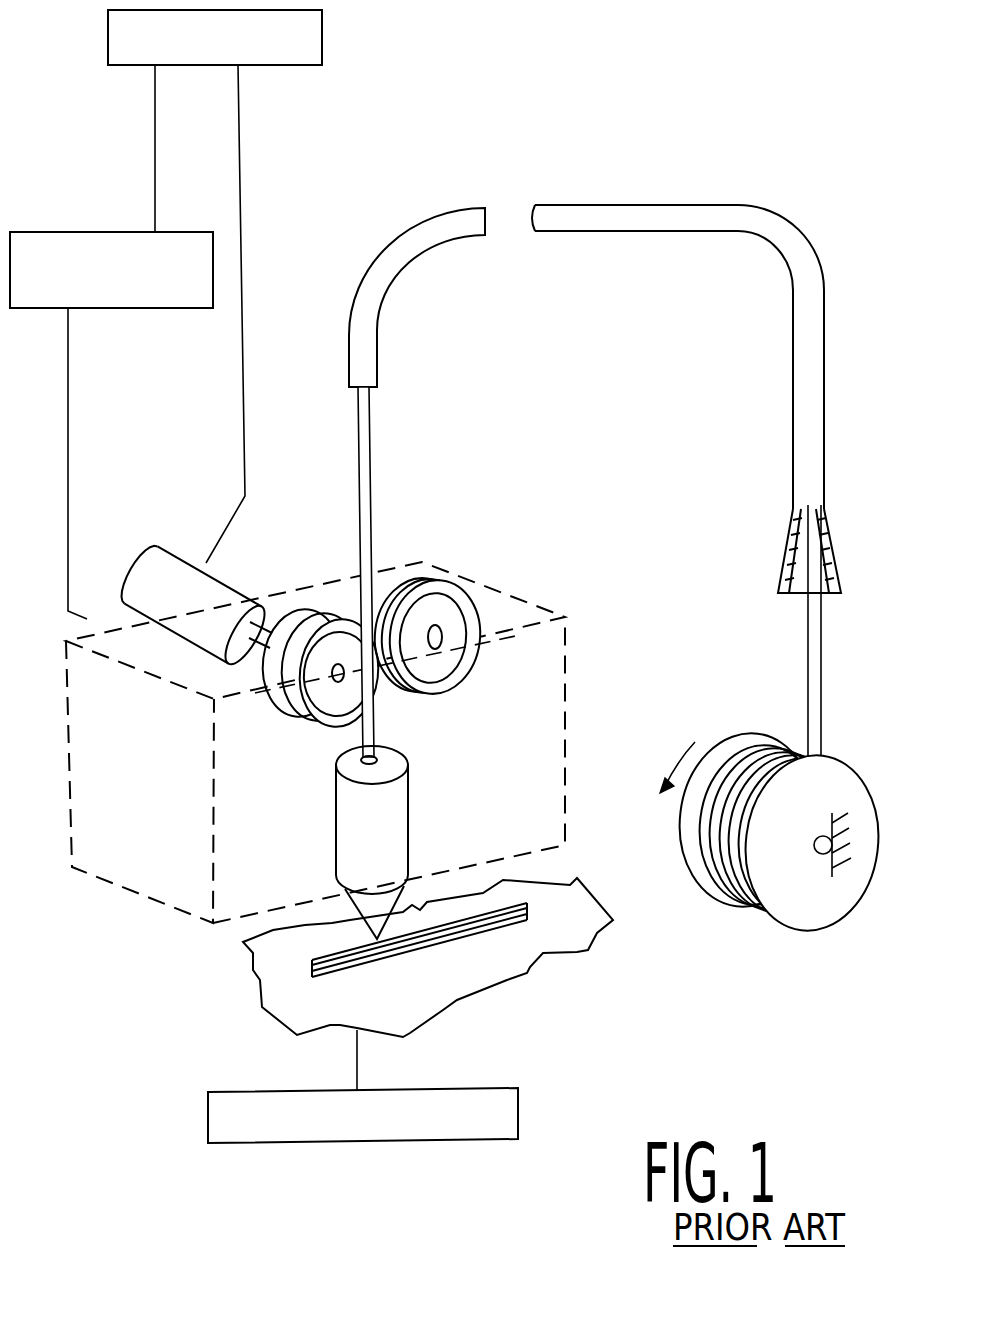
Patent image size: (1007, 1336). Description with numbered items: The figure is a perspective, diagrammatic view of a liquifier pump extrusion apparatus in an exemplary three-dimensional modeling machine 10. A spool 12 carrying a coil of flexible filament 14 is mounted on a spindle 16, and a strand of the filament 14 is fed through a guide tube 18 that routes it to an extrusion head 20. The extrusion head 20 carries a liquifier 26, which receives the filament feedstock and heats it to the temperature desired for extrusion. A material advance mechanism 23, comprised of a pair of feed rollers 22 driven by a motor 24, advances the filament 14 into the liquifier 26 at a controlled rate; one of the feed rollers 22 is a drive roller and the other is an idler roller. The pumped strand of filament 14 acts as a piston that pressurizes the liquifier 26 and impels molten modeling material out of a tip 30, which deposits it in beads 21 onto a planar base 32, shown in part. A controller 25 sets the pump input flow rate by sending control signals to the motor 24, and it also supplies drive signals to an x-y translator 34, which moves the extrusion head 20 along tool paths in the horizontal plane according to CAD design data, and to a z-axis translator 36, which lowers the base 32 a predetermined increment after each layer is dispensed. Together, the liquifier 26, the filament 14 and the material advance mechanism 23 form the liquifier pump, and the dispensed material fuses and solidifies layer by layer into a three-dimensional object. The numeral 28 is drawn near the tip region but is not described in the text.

The three-dimensional modeling machine 10 is at (467, 192).
The spool 12 is at (790, 893).
The filament 14 is at (494, 217).
The spindle 16 is at (837, 855).
The guide tube 18 is at (465, 225).
The extrusion head 20 is at (165, 850).
The beads 21 is at (312, 978).
The feed rollers 22 is at (304, 713).
The material advance mechanism 23 is at (463, 590).
The motor 24 is at (162, 561).
The controller 25 is at (322, 22).
The liquifier 26 is at (392, 806).
The nozzle tip 28 is at (405, 886).
The tip 30 is at (370, 935).
The planar base 32 is at (431, 1004).
The x-y translator 34 is at (92, 233).
The z-axis translator 36 is at (500, 1088).